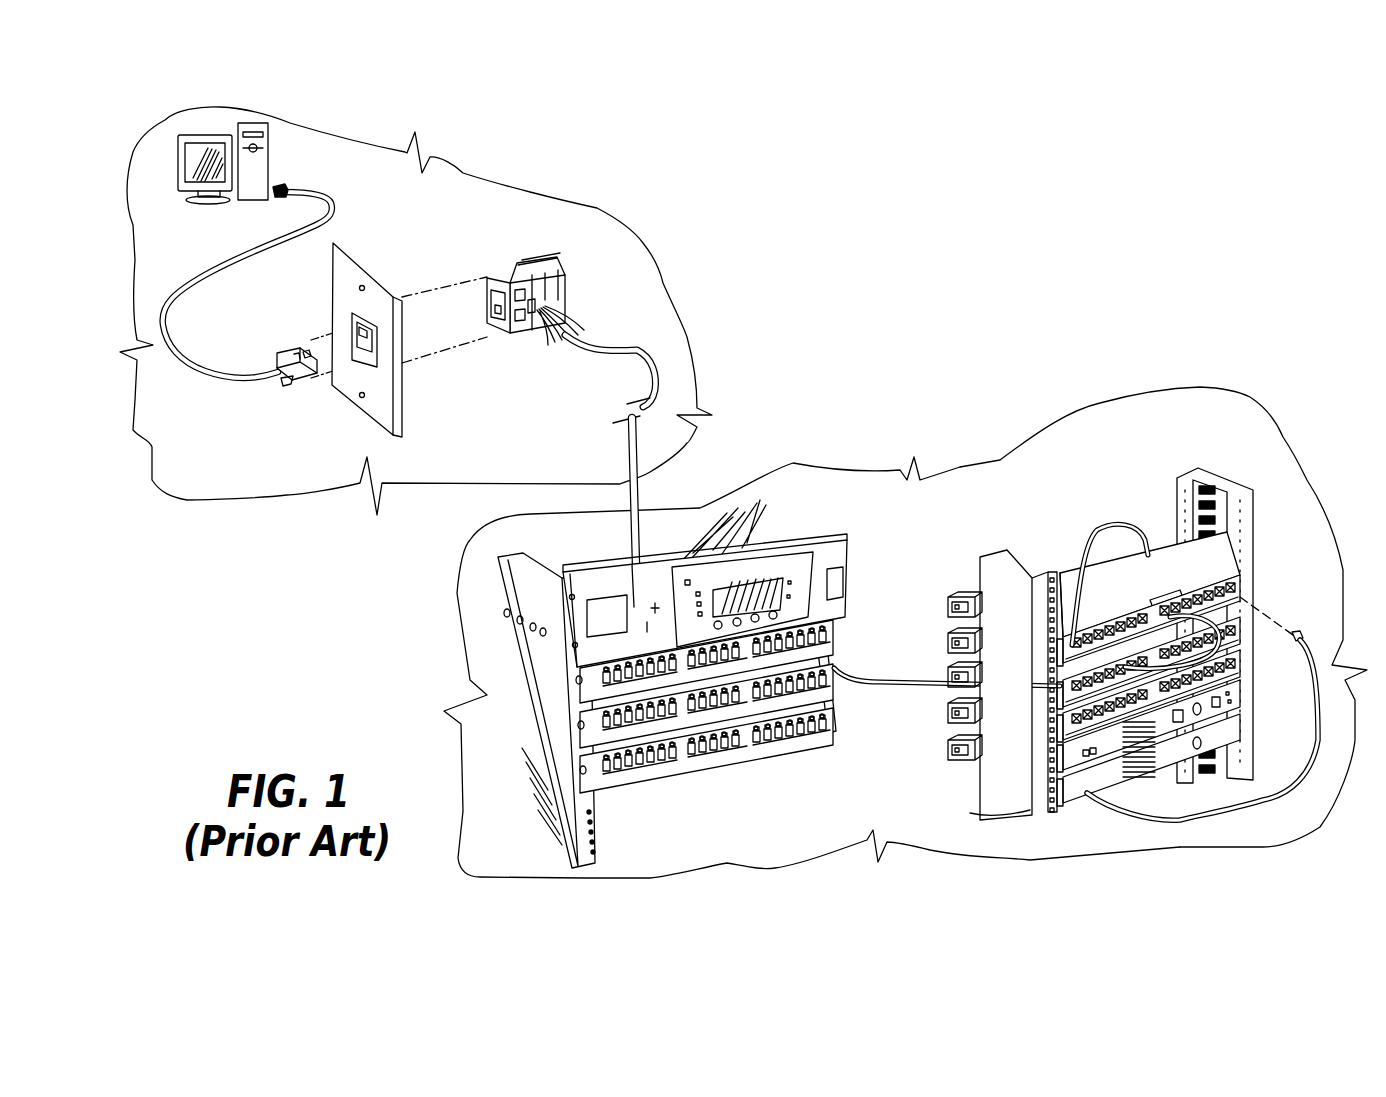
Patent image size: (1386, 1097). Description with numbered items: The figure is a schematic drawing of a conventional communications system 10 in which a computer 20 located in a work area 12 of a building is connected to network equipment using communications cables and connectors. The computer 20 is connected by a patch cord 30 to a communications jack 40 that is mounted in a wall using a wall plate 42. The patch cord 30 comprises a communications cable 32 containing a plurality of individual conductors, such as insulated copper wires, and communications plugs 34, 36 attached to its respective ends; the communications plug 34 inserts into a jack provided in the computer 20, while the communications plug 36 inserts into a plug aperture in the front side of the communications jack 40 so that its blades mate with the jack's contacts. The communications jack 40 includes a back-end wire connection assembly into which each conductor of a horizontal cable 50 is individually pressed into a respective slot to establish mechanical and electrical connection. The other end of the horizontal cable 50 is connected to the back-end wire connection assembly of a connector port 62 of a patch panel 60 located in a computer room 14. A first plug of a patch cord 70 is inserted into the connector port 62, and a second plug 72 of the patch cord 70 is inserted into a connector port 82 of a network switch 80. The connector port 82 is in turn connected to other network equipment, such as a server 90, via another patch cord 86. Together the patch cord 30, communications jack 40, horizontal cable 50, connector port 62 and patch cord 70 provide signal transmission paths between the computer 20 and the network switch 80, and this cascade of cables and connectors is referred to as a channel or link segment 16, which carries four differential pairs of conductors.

The communications system 10 is at (1057, 250).
The work area 12 is at (643, 243).
The computer room 14 is at (1172, 385).
The link segment 16 is at (740, 503).
The computer 20 is at (268, 147).
The patch cord 30 is at (334, 224).
The communications cable 32 is at (177, 306).
The communications plug 34 is at (283, 193).
The communications plug 36 is at (302, 383).
The communications jack 40 is at (513, 272).
The wall plate 42 is at (402, 413).
The horizontal cable 50 is at (605, 350).
The patch panel 60 is at (694, 701).
The connector port 62 is at (668, 755).
The patch cord 70 is at (869, 686).
The second plug 72 is at (1233, 630).
The network switch 80 is at (1240, 585).
The connector port 82 is at (1106, 632).
The patch cord 86 is at (1311, 730).
The server 90 is at (1060, 789).